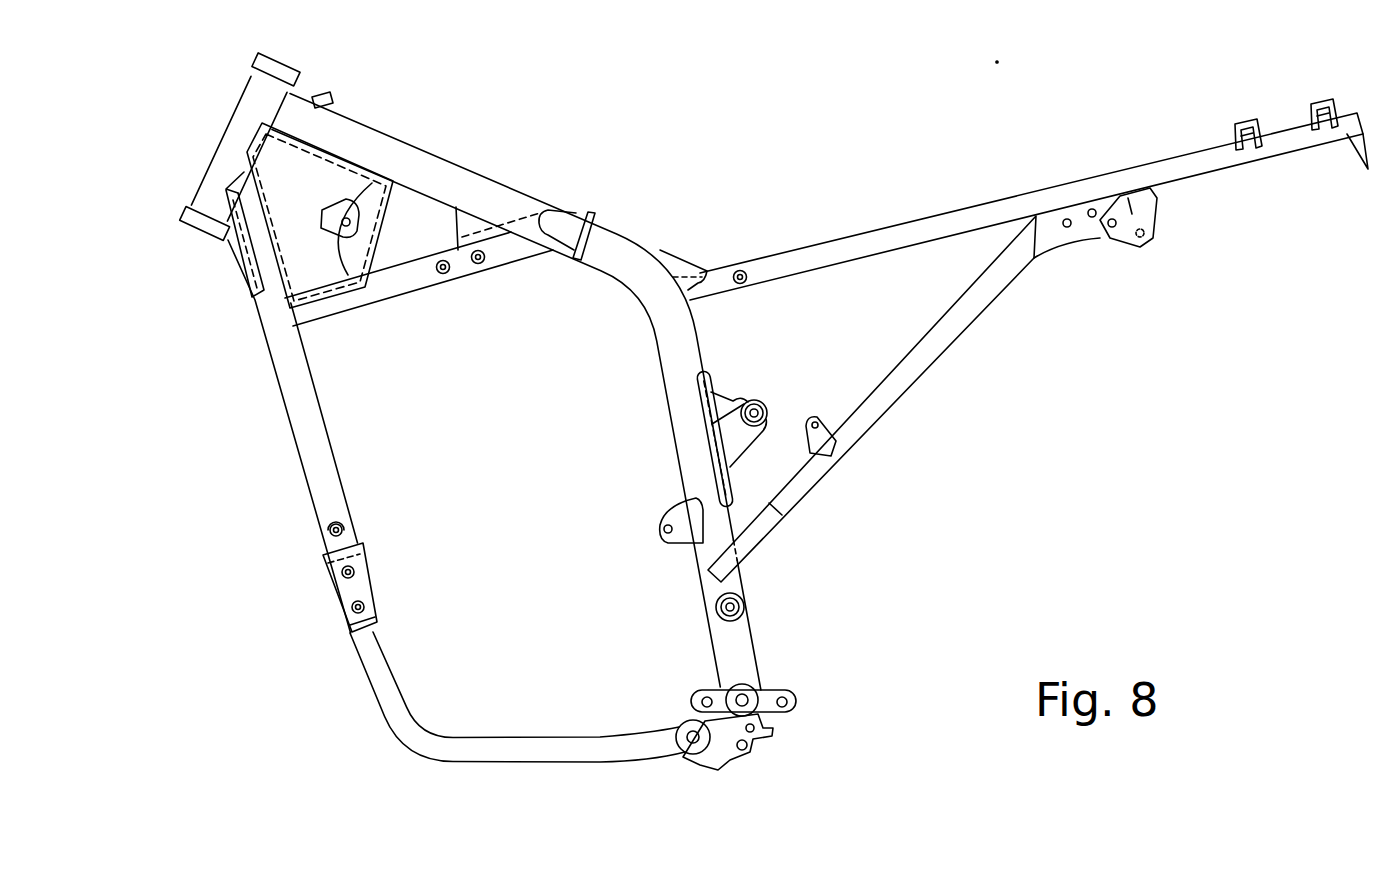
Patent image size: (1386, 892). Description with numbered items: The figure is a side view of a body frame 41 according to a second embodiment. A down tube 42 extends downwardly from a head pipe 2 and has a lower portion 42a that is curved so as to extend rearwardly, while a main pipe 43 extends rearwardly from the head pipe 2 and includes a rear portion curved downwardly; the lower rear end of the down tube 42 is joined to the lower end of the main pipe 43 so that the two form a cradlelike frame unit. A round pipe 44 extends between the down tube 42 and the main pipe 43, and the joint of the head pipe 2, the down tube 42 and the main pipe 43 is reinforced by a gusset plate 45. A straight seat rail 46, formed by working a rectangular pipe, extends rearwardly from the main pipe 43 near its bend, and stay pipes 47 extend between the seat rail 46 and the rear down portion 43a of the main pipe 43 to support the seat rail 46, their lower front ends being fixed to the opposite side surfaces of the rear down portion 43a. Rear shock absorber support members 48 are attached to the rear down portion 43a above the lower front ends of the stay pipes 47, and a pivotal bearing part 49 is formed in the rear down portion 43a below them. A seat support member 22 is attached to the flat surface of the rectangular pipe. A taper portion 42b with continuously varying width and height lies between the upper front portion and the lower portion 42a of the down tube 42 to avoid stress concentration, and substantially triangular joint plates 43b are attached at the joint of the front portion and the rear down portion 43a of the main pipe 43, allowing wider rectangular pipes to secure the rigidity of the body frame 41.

The head pipe 2 is at (221, 137).
The seat support member 22 is at (1113, 234).
The body frame 41 is at (850, 126).
The down tube 42 is at (285, 418).
The lower portion 42a is at (420, 748).
The taper portion 42b is at (340, 598).
The main pipe 43 is at (537, 191).
The rear down portion 43a is at (667, 392).
The joint plates 43b is at (575, 209).
The round pipe 44 is at (410, 295).
The gusset plate 45 is at (313, 182).
The seat rail 46 is at (975, 207).
The stay pipes 47 is at (933, 357).
The rear shock absorber support members 48 is at (758, 398).
The pivotal bearing part 49 is at (745, 607).